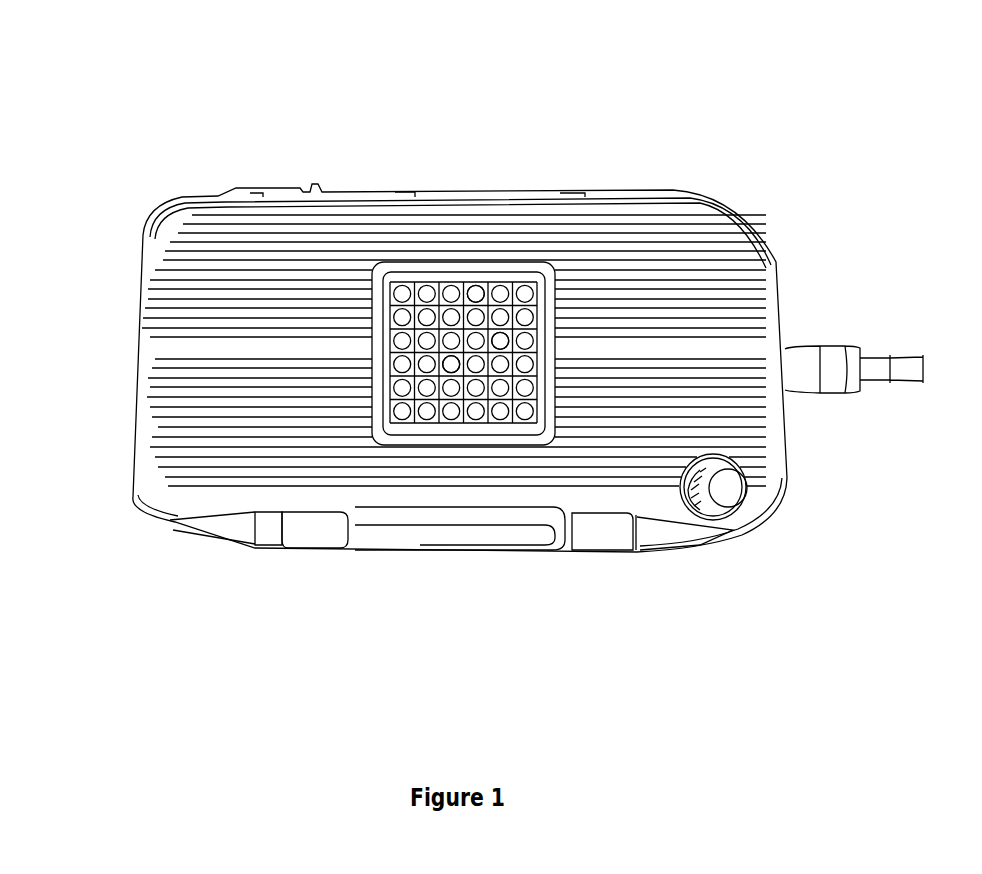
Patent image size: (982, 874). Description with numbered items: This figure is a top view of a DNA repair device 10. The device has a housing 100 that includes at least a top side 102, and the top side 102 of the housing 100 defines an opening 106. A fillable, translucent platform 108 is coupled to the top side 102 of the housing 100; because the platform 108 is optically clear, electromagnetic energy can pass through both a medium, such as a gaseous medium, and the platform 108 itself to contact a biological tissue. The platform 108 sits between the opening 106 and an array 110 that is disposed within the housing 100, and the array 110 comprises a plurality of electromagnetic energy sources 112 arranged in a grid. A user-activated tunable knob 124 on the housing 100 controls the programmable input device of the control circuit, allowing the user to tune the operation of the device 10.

The DNA repair device 10 is at (86, 84).
The housing 100 is at (140, 340).
The top side 102 is at (167, 443).
The opening 106 is at (410, 397).
The fillable, translucent platform 108 is at (477, 285).
The array 110 is at (442, 355).
The electromagnetic energy sources 112 is at (497, 340).
The user-activated tunable knob 124 is at (737, 494).